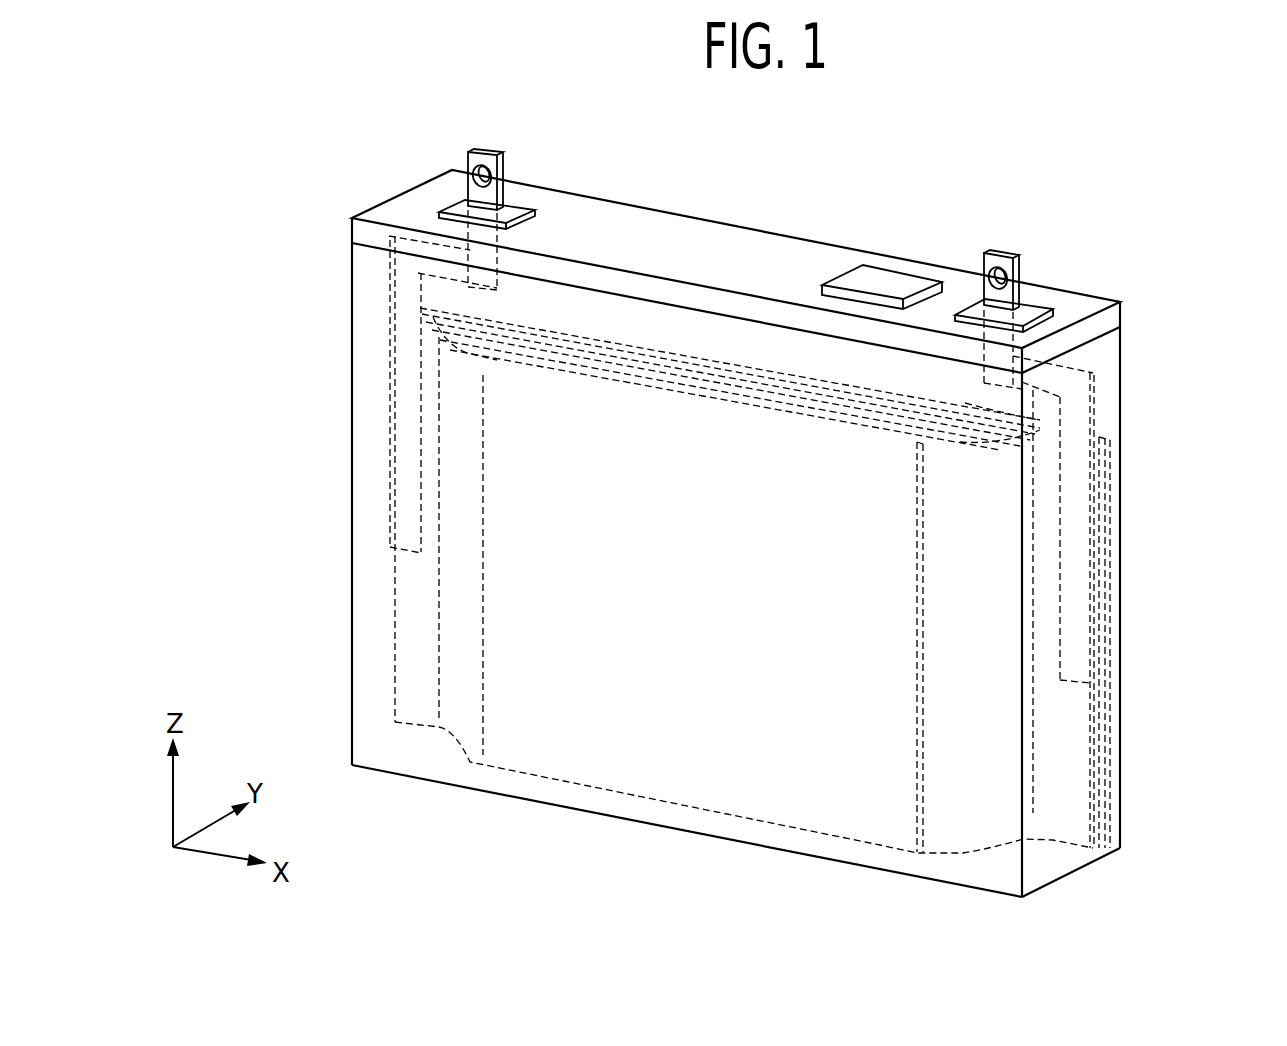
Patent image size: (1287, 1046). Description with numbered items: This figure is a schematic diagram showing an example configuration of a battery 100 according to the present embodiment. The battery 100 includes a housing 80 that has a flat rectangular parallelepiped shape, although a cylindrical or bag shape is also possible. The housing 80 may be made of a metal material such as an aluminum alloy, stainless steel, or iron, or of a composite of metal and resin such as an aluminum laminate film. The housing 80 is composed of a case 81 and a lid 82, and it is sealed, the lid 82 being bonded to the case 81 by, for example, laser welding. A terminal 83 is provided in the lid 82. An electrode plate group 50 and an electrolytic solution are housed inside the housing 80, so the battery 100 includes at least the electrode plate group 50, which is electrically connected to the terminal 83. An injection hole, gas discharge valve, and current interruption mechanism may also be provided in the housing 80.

The battery 100 is at (1112, 177).
The housing 80 is at (1197, 307).
The case 81 is at (1120, 367).
The lid 82 is at (1120, 318).
The terminal 83 is at (492, 154).
The electrode plate group 50 is at (500, 542).